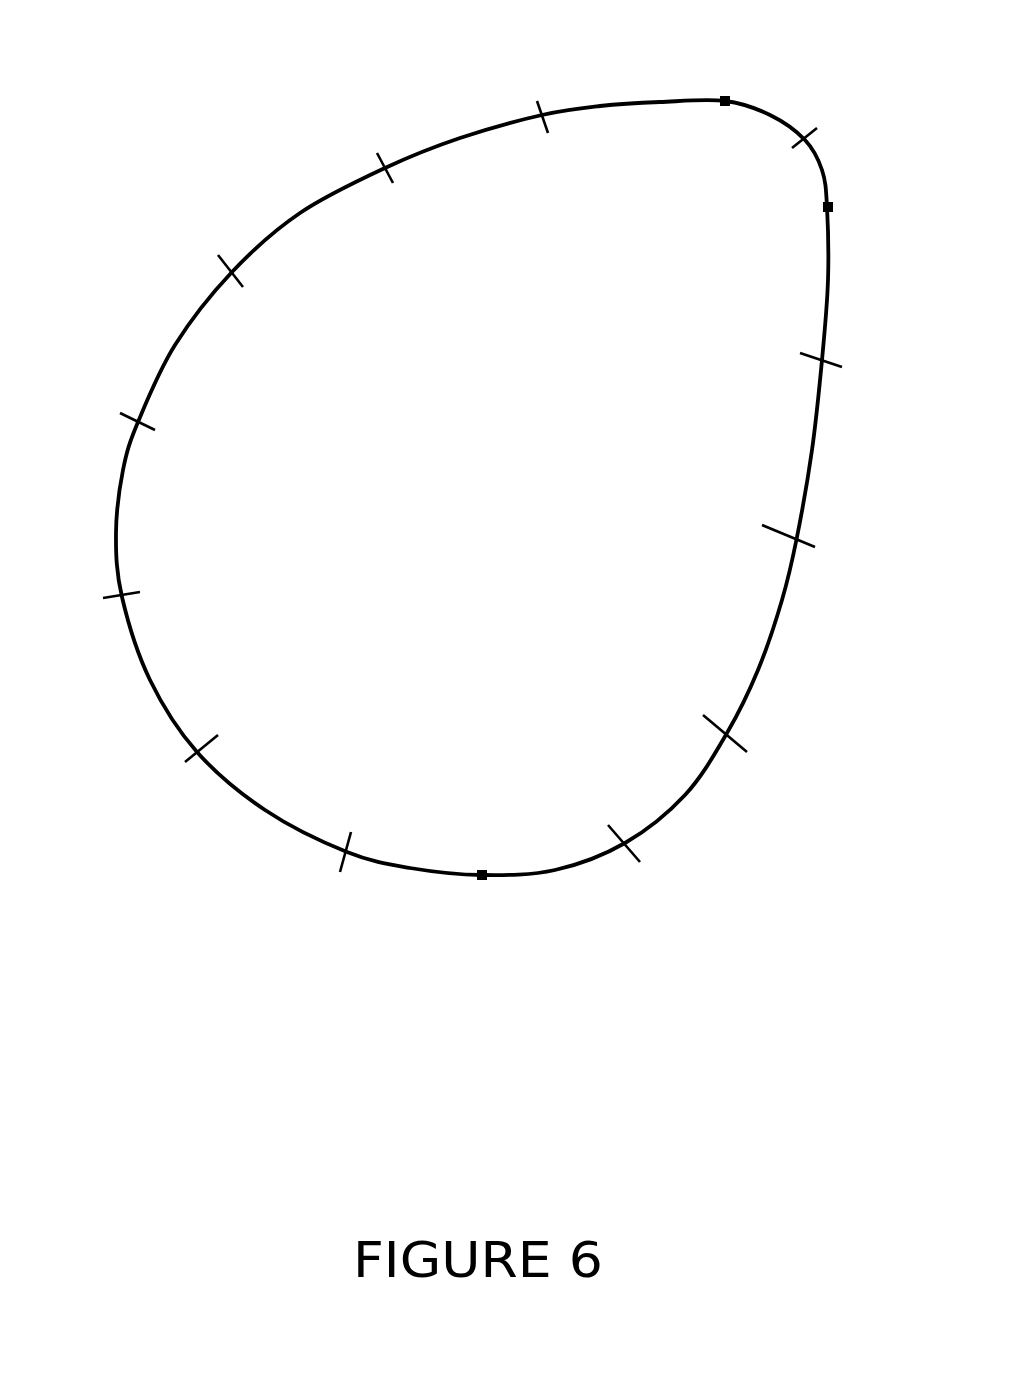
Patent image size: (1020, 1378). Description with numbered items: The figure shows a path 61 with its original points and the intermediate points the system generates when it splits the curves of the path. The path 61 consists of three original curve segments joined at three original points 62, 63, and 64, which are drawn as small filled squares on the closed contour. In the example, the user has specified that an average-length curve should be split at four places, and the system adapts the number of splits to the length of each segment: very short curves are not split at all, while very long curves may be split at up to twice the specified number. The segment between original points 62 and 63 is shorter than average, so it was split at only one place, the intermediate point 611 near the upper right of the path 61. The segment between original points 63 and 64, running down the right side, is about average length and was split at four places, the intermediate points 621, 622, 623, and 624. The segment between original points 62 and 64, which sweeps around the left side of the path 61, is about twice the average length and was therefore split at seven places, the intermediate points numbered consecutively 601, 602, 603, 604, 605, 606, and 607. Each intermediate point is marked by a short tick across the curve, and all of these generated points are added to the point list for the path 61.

The path 61 is at (546, 451).
The original point 62 is at (722, 69).
The original point 63 is at (862, 206).
The original point 64 is at (497, 910).
The intermediate point 601 is at (345, 880).
The intermediate point 602 is at (168, 772).
The intermediate point 603 is at (88, 611).
The intermediate point 604 is at (100, 410).
The intermediate point 605 is at (196, 257).
The intermediate point 606 is at (355, 148).
The intermediate point 607 is at (517, 97).
The intermediate point 611 is at (843, 123).
The intermediate point 621 is at (860, 365).
The intermediate point 622 is at (827, 550).
The intermediate point 623 is at (758, 749).
The intermediate point 624 is at (661, 867).